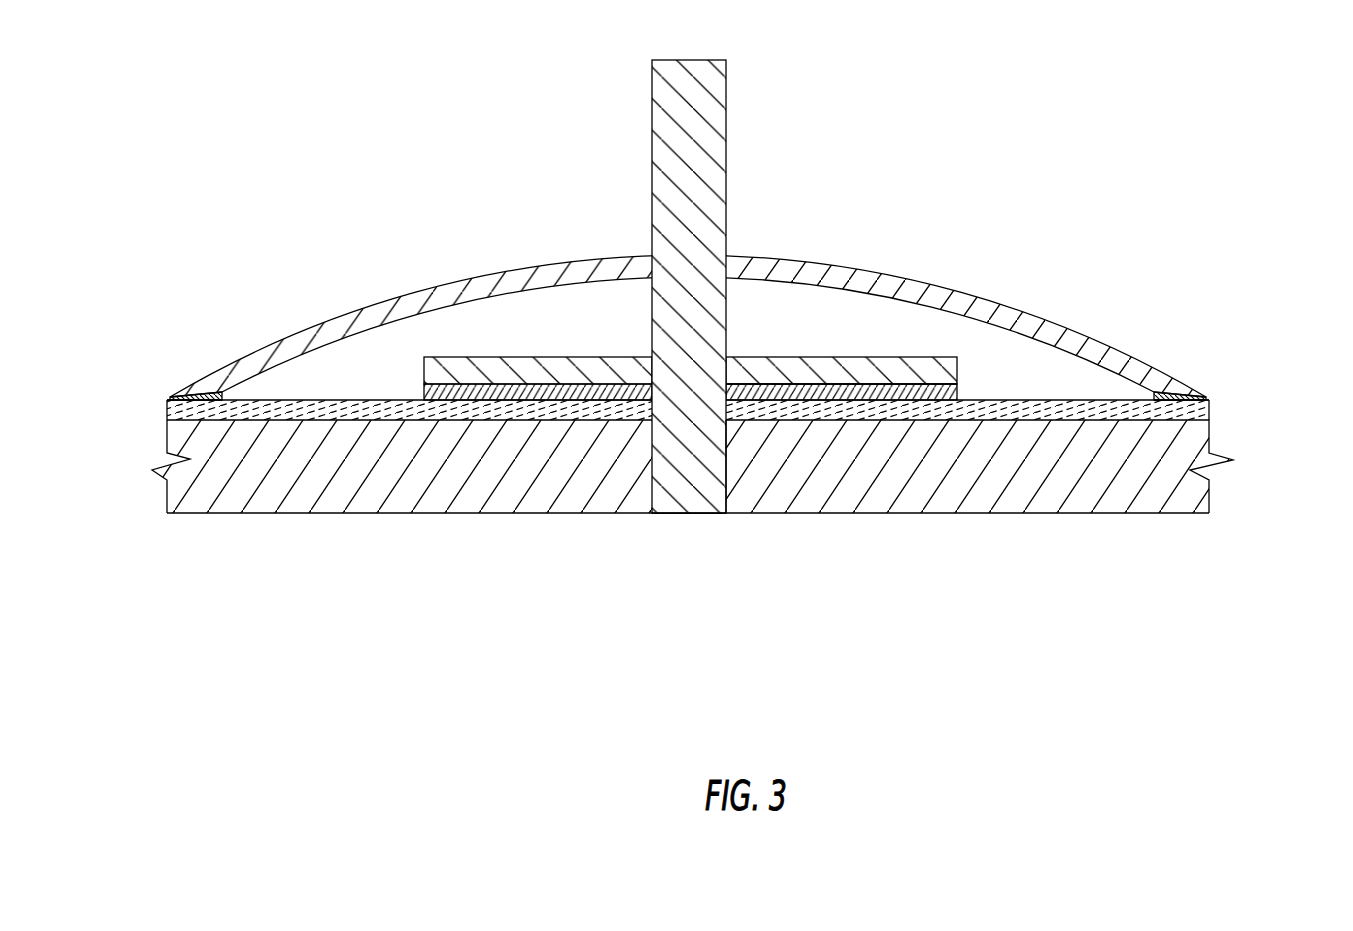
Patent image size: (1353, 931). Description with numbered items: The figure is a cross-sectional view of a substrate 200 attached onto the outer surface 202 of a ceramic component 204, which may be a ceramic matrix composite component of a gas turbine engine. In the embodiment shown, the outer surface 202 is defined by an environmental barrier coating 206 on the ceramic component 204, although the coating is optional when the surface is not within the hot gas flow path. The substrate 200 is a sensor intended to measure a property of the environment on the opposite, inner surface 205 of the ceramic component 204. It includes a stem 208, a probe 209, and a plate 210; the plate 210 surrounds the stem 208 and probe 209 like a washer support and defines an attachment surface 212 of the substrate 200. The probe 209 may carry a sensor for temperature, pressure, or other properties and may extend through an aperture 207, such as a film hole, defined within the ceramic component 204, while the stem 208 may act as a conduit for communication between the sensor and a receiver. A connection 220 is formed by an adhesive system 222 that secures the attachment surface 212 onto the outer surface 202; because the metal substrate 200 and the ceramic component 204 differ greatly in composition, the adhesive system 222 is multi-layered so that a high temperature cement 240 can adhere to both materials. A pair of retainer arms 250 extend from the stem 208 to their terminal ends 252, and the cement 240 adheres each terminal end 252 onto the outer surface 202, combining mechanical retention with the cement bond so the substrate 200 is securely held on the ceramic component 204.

The substrate 200 is at (795, 147).
The outer surface 202 is at (1061, 396).
The ceramic component 204 is at (1045, 495).
The inner surface 205 is at (924, 516).
The environmental barrier coating 206 is at (360, 410).
The aperture 207 is at (733, 458).
The stem 208 is at (668, 138).
The probe 209 is at (682, 485).
The plate 210 is at (500, 367).
The attachment surface 212 is at (563, 382).
The connection 220 is at (858, 384).
The adhesive system 222 is at (762, 384).
The cement 240 is at (170, 397).
The retainer arms 250 is at (597, 268).
The terminal ends 252 is at (200, 367).